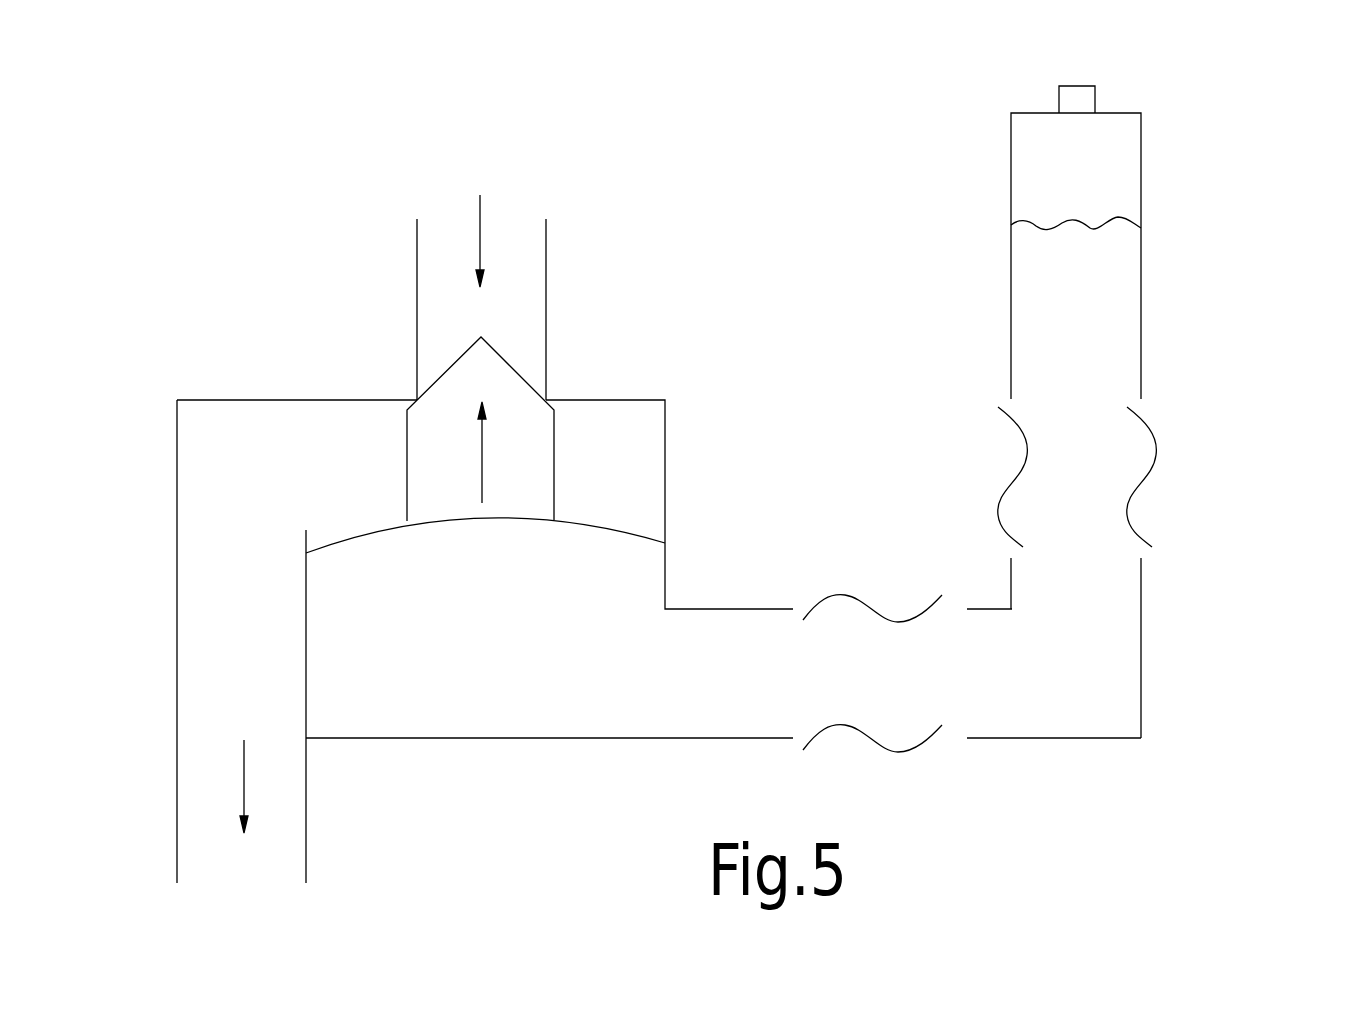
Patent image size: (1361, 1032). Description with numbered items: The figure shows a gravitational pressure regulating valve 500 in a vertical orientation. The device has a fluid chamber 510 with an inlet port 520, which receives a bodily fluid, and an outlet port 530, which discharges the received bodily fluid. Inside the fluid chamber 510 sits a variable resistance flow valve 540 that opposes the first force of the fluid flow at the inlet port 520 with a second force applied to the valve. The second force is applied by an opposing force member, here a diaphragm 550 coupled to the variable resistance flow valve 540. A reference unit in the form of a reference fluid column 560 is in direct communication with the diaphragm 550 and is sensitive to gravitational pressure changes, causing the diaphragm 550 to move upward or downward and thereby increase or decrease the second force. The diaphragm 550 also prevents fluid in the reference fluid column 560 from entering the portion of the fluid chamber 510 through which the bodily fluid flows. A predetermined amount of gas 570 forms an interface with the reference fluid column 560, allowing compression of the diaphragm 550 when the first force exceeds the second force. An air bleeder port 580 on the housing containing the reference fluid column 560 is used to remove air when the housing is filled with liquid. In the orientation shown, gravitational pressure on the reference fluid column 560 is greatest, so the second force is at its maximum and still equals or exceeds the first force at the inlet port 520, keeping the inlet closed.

The gravitational pressure regulating valve 500 is at (1252, 205).
The fluid chamber 510 is at (648, 448).
The inlet port 520 is at (547, 386).
The outlet port 530 is at (292, 453).
The variable resistance flow valve 540 is at (554, 466).
The diaphragm 550 is at (623, 533).
The reference fluid column 560 is at (1090, 367).
The gas 570 is at (1040, 158).
The air bleeder port 580 is at (1075, 103).